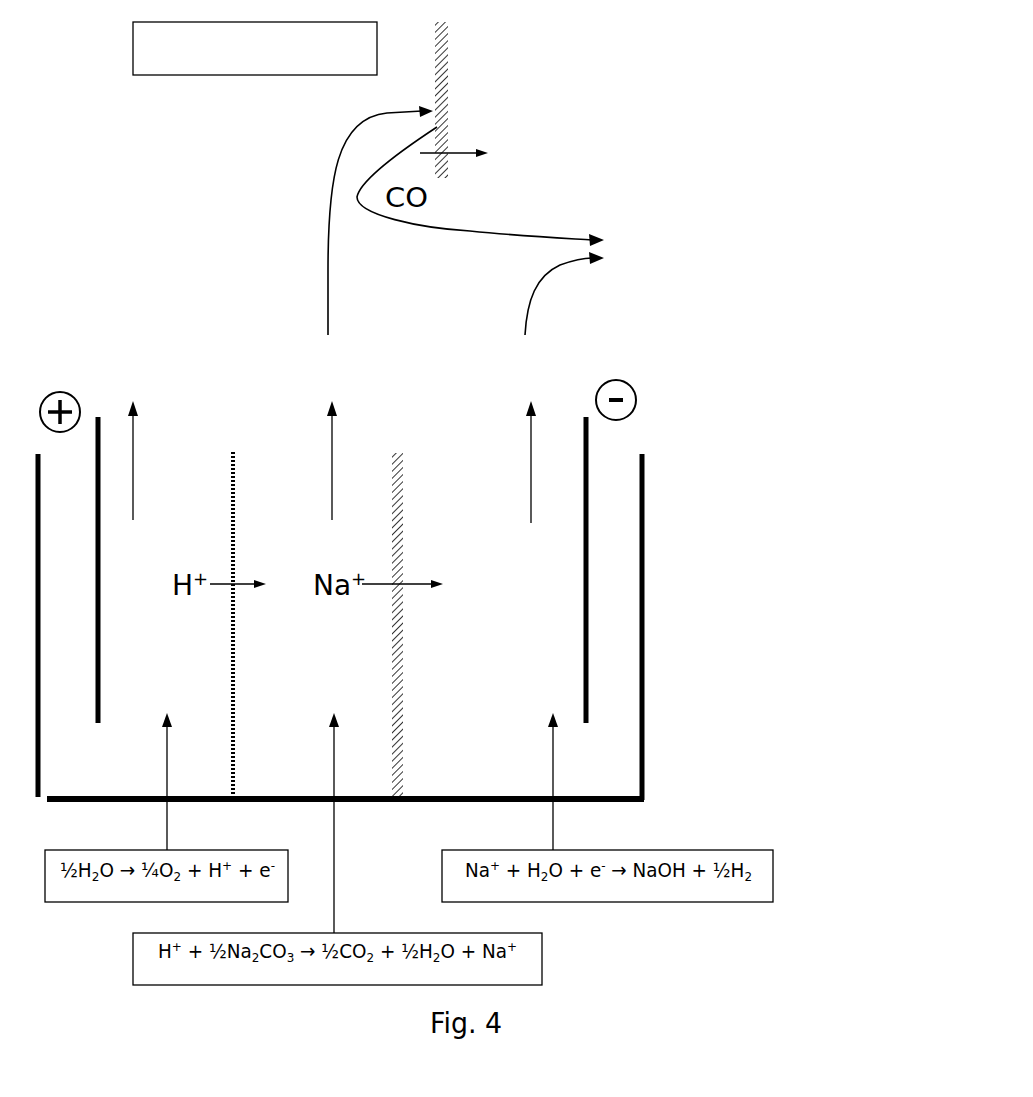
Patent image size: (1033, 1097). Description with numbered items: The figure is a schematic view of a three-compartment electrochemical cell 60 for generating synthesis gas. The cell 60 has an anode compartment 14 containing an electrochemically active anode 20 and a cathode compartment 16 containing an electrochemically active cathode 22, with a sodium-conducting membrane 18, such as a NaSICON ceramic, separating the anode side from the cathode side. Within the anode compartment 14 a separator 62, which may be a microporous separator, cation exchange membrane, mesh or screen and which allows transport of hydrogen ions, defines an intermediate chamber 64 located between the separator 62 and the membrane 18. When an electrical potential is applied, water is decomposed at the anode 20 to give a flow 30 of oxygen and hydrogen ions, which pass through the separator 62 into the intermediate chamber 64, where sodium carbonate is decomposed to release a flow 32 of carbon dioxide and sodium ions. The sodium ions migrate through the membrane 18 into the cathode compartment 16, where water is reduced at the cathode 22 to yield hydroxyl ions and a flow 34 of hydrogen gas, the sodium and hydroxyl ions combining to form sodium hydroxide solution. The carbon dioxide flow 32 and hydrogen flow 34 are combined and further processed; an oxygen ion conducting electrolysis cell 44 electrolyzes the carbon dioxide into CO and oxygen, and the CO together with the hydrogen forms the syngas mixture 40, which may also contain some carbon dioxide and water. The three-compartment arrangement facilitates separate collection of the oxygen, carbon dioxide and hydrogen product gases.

The anode compartment 14 is at (98, 767).
The cathode compartment 16 is at (606, 767).
The sodium-conducting membrane 18 is at (403, 733).
The anode 20 is at (96, 585).
The cathode 22 is at (588, 582).
The flow of oxygen 30 is at (135, 465).
The flow of carbon dioxide 32 is at (332, 449).
The flow of hydrogen gas 34 is at (531, 434).
The syngas 40 is at (749, 190).
The oxygen ion conducting electrolysis cell 44 is at (448, 70).
The three-compartment electrochemical cell 60 is at (697, 592).
The separator 62 is at (234, 733).
The intermediate chamber 64 is at (374, 767).